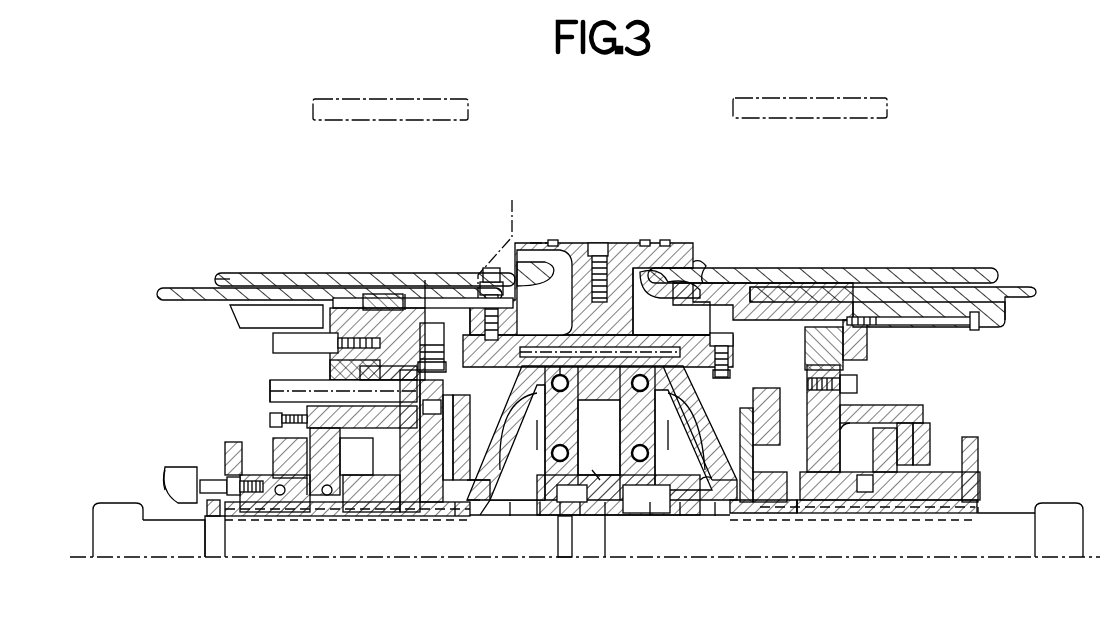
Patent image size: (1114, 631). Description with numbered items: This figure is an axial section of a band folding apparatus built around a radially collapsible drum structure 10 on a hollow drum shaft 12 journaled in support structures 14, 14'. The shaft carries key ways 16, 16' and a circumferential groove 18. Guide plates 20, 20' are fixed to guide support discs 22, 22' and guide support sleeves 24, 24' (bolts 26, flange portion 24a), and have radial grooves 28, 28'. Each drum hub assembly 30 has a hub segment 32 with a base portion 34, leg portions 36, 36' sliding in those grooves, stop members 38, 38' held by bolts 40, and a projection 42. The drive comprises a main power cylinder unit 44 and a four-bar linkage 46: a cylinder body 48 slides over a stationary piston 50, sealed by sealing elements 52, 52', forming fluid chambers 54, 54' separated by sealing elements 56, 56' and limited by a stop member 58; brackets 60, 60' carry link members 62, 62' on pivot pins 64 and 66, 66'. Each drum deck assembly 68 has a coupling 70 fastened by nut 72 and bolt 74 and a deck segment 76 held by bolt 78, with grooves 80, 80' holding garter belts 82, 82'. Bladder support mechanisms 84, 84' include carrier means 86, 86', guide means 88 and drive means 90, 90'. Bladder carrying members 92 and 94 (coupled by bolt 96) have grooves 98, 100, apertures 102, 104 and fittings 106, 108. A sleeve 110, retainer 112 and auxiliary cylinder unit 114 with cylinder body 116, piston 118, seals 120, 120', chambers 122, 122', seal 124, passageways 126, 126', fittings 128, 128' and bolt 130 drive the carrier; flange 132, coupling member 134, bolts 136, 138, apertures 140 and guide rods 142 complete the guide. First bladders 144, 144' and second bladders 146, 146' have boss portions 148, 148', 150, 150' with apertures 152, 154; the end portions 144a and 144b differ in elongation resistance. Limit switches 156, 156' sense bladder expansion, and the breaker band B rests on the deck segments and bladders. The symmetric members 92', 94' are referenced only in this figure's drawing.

The radially collapsible drum structure 10 is at (617, 225).
The hollow drum shaft 12 is at (985, 513).
The support structure 14 is at (118, 530).
The support structure 14' is at (1059, 530).
The first set of key ways 16 is at (306, 538).
The second set of key ways 16' is at (855, 511).
The circumferential groove 18 is at (602, 548).
The annular guide plate 20 is at (598, 497).
The annular guide plate 20' is at (754, 525).
The guide support disc 22 is at (347, 527).
The guide support disc 22' is at (865, 526).
The guide support sleeve 24 is at (462, 529).
The guide support sleeve 24' is at (812, 529).
The annular flange portion 24a is at (405, 381).
The bolt 26 is at (470, 497).
The radial groove 28 is at (491, 470).
The radial groove 28' is at (718, 473).
The drum hub assembly 30 is at (760, 364).
The hub segment 32 is at (468, 396).
The intermediate base portion 34 is at (700, 312).
The leg portion 36 is at (602, 433).
The leg portion 36' is at (687, 423).
The stop member 38 is at (397, 441).
The stop member 38' is at (766, 438).
The bolt 40 is at (518, 458).
The projection 42 is at (578, 405).
The fluid-operated main power cylinder unit 44 is at (525, 515).
The parallel crank four-bar linkage mechanism 46 is at (625, 386).
The hollow movable cylinder body 48 is at (646, 499).
The ring-shaped stationary piston 50 is at (608, 506).
The annular sealing element 52 is at (533, 526).
The annular sealing element 52' is at (701, 526).
The first fluid chamber 54 is at (670, 529).
The second fluid chamber 54' is at (536, 542).
The annular sealing element 56 is at (598, 461).
The annular sealing element 56' is at (585, 526).
The stop member 58 is at (680, 520).
The bracket member 60 is at (602, 483).
The bracket member 60' is at (694, 462).
The link member 62 is at (529, 436).
The link member 62' is at (681, 439).
The pivot pin 64 is at (620, 447).
The pivot pin 66 is at (521, 431).
The pivot pin 66' is at (680, 425).
The drum deck assembly 68 is at (705, 249).
The coupling 70 is at (642, 300).
The nut 72 is at (745, 385).
The bolt 74 is at (734, 342).
The deck segment 76 is at (628, 243).
The bolt 78 is at (600, 243).
The groove 80 is at (554, 220).
The groove 80' is at (678, 226).
The endless garter belt 82 is at (543, 224).
The endless garter belt 82' is at (654, 216).
The bladder support mechanism 84 is at (192, 365).
The bladder support mechanism 84' is at (973, 366).
The bladder carrier means 86 is at (245, 348).
The bladder carrier means 86' is at (909, 337).
The guide means 88 is at (258, 396).
The drive means 90 is at (185, 402).
The drive means 90' is at (895, 433).
The first bladder carrying member 92 is at (637, 301).
The block 92' is at (854, 345).
The second bladder carrying member 94 is at (260, 316).
The bar 94' is at (941, 310).
The bolt 96 is at (980, 322).
The first circumferential groove 98 is at (476, 300).
The second circumferential groove 100 is at (410, 294).
The first aperture 102 is at (498, 330).
The second aperture 104 is at (470, 300).
The first fluid inlet/outlet fitting 106 is at (444, 352).
The second fluid inlet/outlet fitting 108 is at (545, 382).
The cylindrical sleeve 110 is at (218, 540).
The ring-shaped retainer element 112 is at (205, 505).
The fluid-operated auxiliary power cylinder unit 114 is at (250, 470).
The hollow movable cylinder body 116 is at (275, 418).
The annular stationary piston 118 is at (340, 465).
The annular sealing element 120 is at (273, 458).
The annular sealing element 120' is at (371, 493).
The first fluid chamber 122 is at (313, 518).
The second fluid chamber 122' is at (351, 455).
The annular sealing element 124 is at (380, 407).
The fluid passageway 126 is at (283, 519).
The fluid passageway 126' is at (345, 518).
The fitting 128 is at (154, 485).
The fitting 128' is at (174, 464).
The bolt 130 is at (230, 478).
The annular flange portion 132 is at (352, 370).
The ring-shaped coupling member 134 is at (355, 308).
The bolt 136 is at (330, 340).
The bolt 138 is at (858, 384).
The aperture 140 is at (343, 391).
The guide rod 142 is at (283, 381).
The first annular bladder 144 is at (365, 259).
The first annular bladder 144' is at (823, 258).
The folded-over inner axial end portion 144a is at (600, 346).
The folded-over outer axial end portion 144b is at (214, 282).
The second annular bladder 146 is at (326, 312).
The second annular bladder 146' is at (918, 287).
The annular rib or boss portion 148 is at (544, 292).
The annular rib or boss portion 148' is at (719, 259).
The annular rib or boss portion 150 is at (381, 277).
The annular rib or boss portion 150' is at (819, 269).
The aperture 152 is at (495, 268).
The aperture 154 is at (437, 280).
The limit switch 156 is at (390, 129).
The limit switch 156' is at (810, 127).
The breaker band B is at (498, 240).